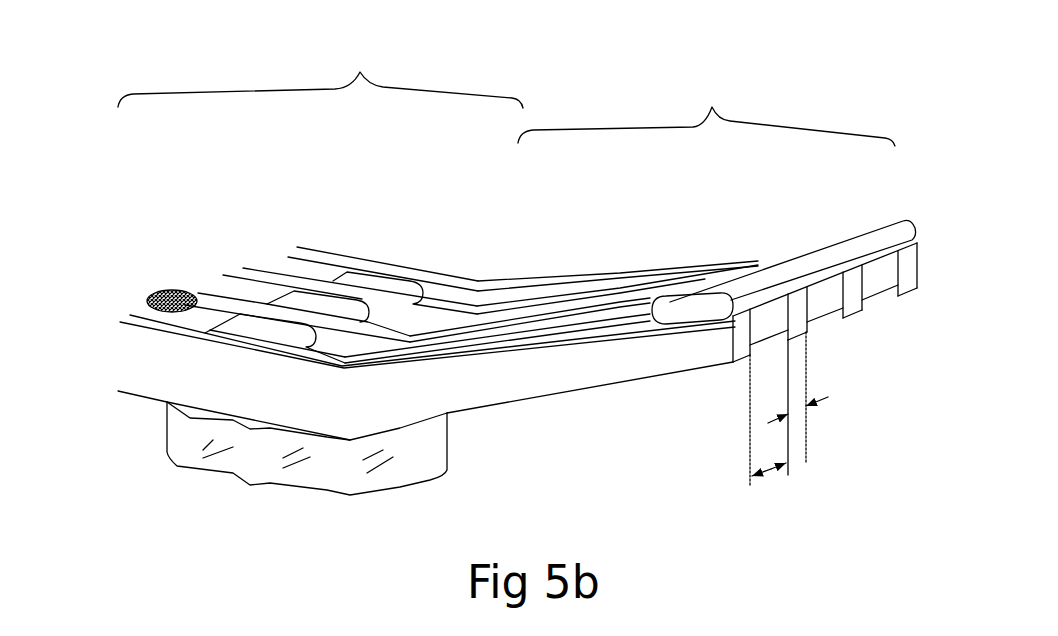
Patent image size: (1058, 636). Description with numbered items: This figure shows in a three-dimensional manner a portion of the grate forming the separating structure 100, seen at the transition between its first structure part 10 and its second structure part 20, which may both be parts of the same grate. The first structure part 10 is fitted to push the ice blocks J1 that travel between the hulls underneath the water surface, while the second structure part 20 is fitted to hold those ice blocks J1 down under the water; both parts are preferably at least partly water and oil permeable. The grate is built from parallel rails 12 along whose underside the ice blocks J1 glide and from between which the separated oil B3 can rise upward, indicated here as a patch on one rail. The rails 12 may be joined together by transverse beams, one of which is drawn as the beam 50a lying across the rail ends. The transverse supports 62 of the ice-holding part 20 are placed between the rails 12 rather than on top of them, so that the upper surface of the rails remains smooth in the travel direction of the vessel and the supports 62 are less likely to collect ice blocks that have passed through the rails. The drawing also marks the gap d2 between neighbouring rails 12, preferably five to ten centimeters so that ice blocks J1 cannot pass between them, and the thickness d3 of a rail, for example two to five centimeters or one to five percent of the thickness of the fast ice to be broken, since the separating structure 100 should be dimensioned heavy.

The separating structure 100 is at (757, 57).
The first structure part 10 is at (706, 109).
The second structure part 20 is at (320, 72).
The rails 12 is at (477, 343).
The transverse supports 62 is at (251, 323).
The pressure bar 50a is at (871, 222).
The separated oil B3 is at (118, 248).
The ice blocks J1 is at (166, 441).
The gap between the rails d2 is at (769, 425).
The thickness of the rails d3 is at (805, 397).